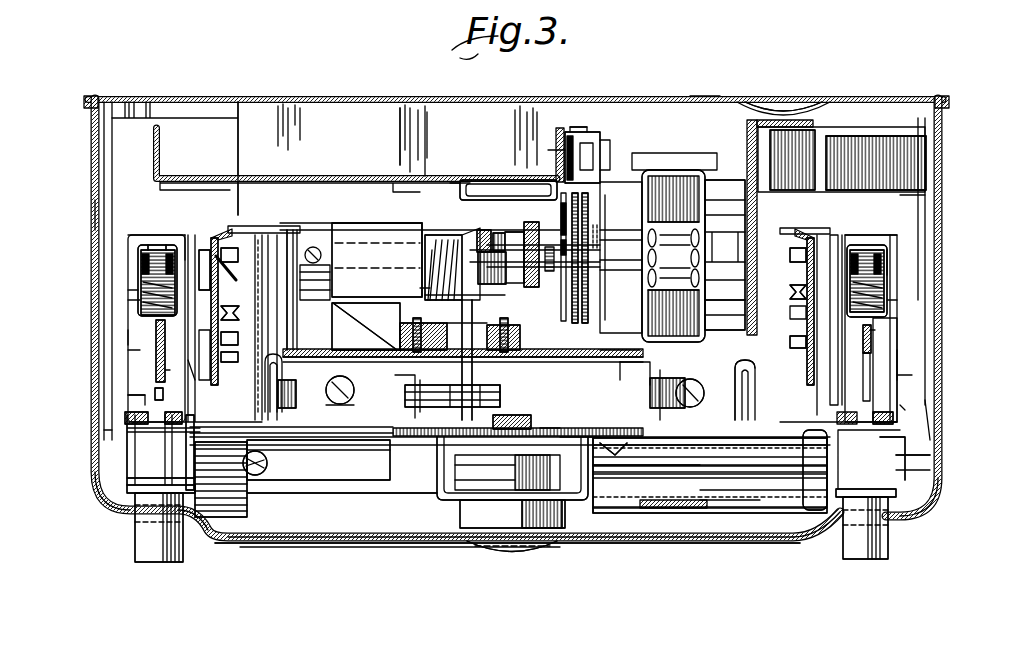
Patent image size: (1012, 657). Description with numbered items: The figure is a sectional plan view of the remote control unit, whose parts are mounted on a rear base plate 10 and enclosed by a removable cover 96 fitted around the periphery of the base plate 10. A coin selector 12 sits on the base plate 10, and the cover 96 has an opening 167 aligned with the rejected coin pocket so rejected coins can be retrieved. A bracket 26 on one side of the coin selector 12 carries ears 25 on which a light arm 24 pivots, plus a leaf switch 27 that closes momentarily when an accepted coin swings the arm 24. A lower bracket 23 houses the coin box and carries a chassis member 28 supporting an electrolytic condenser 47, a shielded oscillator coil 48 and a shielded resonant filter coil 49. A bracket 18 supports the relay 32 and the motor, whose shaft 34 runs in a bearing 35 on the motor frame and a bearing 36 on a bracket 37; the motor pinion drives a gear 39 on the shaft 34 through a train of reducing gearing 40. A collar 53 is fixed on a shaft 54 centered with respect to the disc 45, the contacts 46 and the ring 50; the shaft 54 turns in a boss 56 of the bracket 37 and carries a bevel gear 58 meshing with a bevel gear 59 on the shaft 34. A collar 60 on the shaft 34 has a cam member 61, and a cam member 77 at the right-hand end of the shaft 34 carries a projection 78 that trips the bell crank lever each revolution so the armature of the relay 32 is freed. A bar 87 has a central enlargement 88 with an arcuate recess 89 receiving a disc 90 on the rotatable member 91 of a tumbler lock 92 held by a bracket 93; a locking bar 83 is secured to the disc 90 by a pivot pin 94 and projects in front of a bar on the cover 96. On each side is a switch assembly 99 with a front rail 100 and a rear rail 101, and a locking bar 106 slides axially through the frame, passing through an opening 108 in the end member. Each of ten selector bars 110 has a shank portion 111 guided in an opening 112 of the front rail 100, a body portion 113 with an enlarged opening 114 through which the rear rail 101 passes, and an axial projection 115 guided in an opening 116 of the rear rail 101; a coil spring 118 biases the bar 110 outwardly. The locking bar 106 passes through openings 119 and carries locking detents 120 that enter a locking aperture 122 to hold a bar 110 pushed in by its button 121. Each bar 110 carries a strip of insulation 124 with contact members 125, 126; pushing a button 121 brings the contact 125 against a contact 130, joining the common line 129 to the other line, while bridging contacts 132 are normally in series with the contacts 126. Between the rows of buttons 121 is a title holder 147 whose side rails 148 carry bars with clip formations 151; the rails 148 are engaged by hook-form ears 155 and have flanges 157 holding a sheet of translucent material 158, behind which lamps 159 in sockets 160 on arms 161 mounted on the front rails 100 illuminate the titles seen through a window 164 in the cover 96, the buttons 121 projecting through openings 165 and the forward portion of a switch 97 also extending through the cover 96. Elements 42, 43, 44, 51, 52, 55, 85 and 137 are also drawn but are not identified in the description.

The rear base plate 10 is at (702, 98).
The coin selector 12 is at (472, 180).
The bracket 18 is at (776, 118).
The lower bracket 23 is at (298, 230).
The light arm 24 is at (468, 180).
The ears 25 is at (578, 130).
The bracket 26 is at (565, 149).
The leaf switch 27 is at (598, 165).
The chassis member 28 is at (280, 539).
The relay 32 is at (792, 160).
The shaft 34 is at (440, 228).
The bearing 35 is at (612, 240).
The bearing 36 is at (347, 225).
The bracket 37 is at (462, 330).
The gear 39 is at (535, 228).
The train of reducing gearing 40 is at (590, 195).
The knob 42 is at (312, 215).
The lever 43 is at (335, 303).
The plate 44 is at (366, 341).
The disc 45 is at (618, 365).
The contacts 46 is at (665, 378).
The electrolytic condenser 47 is at (612, 500).
The shielded oscillator coil 48 is at (676, 393).
The shielded resonant filter coil 49 is at (776, 525).
The ring 50 is at (355, 395).
The main plate 51 is at (540, 357).
The toothed member 52 is at (508, 325).
The collar 53 is at (355, 410).
The shaft 54 is at (445, 335).
The bracket 55 is at (366, 326).
The boss 56 is at (479, 327).
The bevel gear 58 is at (440, 288).
The bevel gear 59 is at (478, 244).
The collar 60 is at (490, 236).
The cam member 61 is at (482, 182).
The cam member 77 is at (790, 255).
The projection 78 is at (720, 250).
The locking bar 83 is at (530, 418).
The plate 85 is at (222, 298).
The bar 87 is at (318, 460).
The central enlargement 88 is at (440, 410).
The arcuate recess 89 is at (580, 437).
The disc 90 is at (548, 428).
The rotatable member 91 is at (512, 514).
The tumbler lock 92 is at (520, 556).
The bracket 93 is at (566, 530).
The pivot pin 94 is at (510, 395).
The cover 96 is at (905, 380).
The switch 97 is at (437, 465).
The switch assembly 99 is at (128, 304).
The front rail 100 is at (155, 395).
The rear rail 101 is at (135, 255).
The locking bar 106 is at (158, 345).
The opening 108 is at (200, 525).
The selector bars 110 is at (188, 370).
The shank portion 111 is at (165, 455).
The opening 112 is at (108, 435).
The body portion 113 is at (150, 290).
The enlarged opening 114 is at (186, 232).
The axial projection 115 is at (158, 250).
The opening 116 is at (152, 245).
The coil spring 118 is at (215, 238).
The openings 119 is at (165, 395).
The locking detents 120 is at (185, 412).
The button 121 is at (150, 565).
The locking aperture 122 is at (126, 395).
The strip of insulation 124 is at (930, 197).
The contact member 125 is at (168, 370).
The contact member 126 is at (238, 262).
The common line 129 is at (238, 338).
The contact 130 is at (240, 313).
The bridging contacts 132 is at (832, 212).
The screw 137 is at (238, 357).
The title holder 147 is at (700, 510).
The side rails 148 is at (822, 528).
The clip formations 151 is at (792, 522).
The hook-form ears 155 is at (118, 505).
The flanges 157 is at (135, 440).
The sheet of translucent material 158 is at (185, 470).
The lamps 159 is at (342, 450).
The sockets 160 is at (268, 463).
The arms 161 is at (285, 480).
The window 164 is at (320, 546).
The openings 165 is at (145, 525).
The opening 167 is at (88, 215).